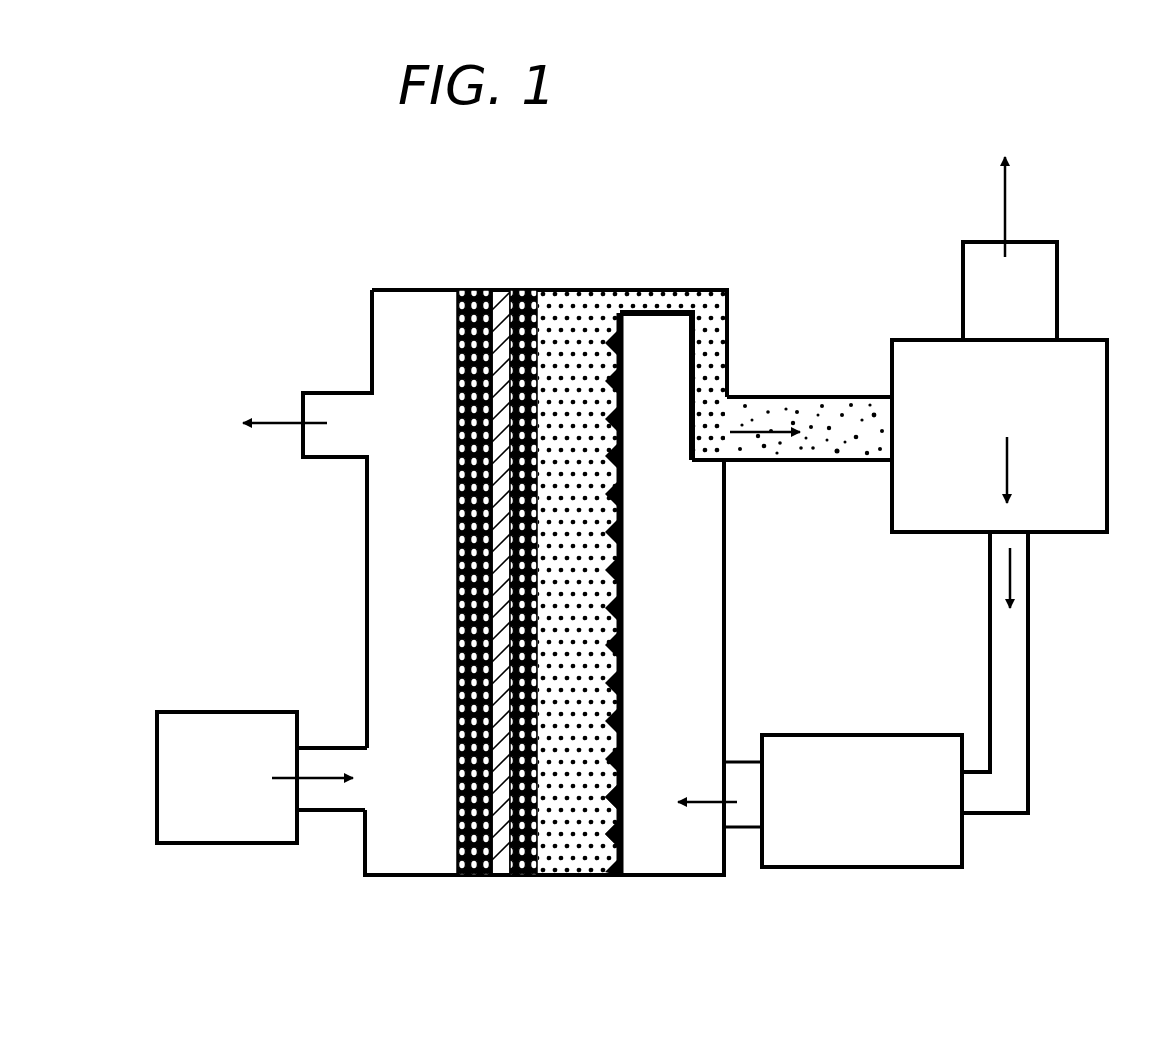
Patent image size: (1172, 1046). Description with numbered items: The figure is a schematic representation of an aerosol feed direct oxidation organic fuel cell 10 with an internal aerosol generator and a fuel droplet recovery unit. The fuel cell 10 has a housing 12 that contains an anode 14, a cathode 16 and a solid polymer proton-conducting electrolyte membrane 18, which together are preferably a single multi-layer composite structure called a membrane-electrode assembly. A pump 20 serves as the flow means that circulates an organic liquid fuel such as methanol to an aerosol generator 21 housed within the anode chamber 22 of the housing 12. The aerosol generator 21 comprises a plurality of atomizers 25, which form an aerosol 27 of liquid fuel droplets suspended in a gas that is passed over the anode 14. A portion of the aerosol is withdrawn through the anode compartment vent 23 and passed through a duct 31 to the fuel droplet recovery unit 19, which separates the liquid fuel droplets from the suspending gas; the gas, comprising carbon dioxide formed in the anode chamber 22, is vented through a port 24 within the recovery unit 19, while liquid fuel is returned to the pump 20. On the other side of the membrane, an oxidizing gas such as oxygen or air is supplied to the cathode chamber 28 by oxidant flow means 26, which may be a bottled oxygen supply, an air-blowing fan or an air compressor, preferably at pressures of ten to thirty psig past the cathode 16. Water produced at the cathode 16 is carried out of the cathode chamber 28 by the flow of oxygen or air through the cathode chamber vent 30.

The aerosol feed organic fuel cell 10 is at (437, 255).
The housing 12 is at (730, 325).
The anode 14 is at (525, 290).
The cathode 16 is at (468, 290).
The solid polymer proton-conducting electrolyte membrane 18 is at (500, 290).
The fuel droplet recovery unit 19 is at (892, 495).
The pump 20 is at (872, 867).
The aerosol generator 21 is at (625, 535).
The anode chamber 22 is at (725, 612).
The anode compartment vent 23 is at (730, 405).
The port 24 is at (963, 290).
The atomizers 25 is at (606, 832).
The oxidant flow means 26 is at (198, 712).
The aerosol 27 is at (578, 320).
The cathode chamber 28 is at (368, 572).
The cathode chamber vent 30 is at (338, 447).
The duct 31 is at (852, 397).